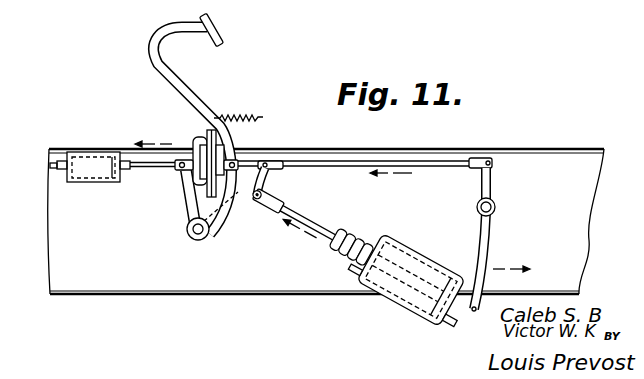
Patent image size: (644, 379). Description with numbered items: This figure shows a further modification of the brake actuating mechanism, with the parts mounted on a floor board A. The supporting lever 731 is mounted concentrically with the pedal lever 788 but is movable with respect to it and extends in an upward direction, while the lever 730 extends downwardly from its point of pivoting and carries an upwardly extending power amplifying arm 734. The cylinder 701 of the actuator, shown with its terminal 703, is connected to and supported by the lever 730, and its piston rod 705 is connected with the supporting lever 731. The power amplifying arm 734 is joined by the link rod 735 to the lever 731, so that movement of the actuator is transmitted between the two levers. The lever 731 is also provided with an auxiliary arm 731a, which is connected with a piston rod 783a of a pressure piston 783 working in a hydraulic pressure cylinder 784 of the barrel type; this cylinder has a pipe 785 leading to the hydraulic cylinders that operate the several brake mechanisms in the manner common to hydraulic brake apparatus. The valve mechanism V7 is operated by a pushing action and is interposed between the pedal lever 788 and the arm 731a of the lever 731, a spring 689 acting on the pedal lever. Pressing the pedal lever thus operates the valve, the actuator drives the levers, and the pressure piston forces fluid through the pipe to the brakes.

The floor board A is at (573, 157).
The spring 689 is at (238, 109).
The cylinder 701 is at (450, 263).
The solenoid terminal 703 is at (430, 323).
The piston rod 705 is at (307, 221).
The lever 730 is at (492, 242).
The supporting lever 731 is at (233, 217).
The auxiliary arm 731a is at (183, 204).
The power amplifying arm 734 is at (492, 183).
The link rod 735 is at (340, 161).
The pressure piston 783 is at (112, 178).
The piston rod 783a is at (158, 168).
The hydraulic pressure cylinder 784 is at (88, 158).
The pipe 785 is at (53, 172).
The pedal lever 788 is at (191, 97).
The valve mechanism V7 is at (207, 139).